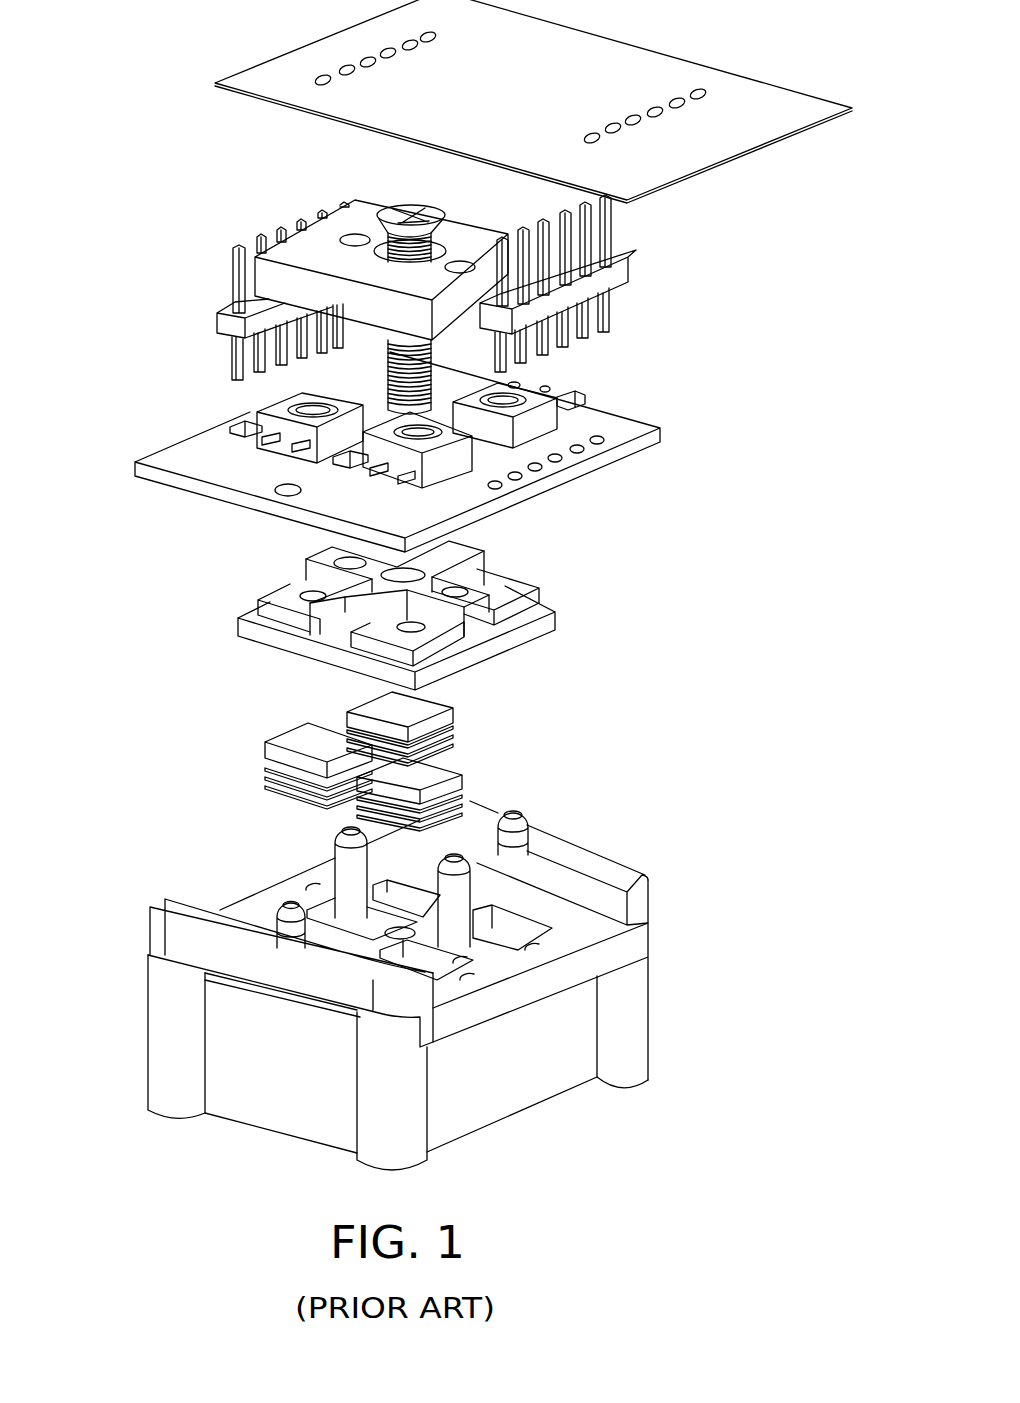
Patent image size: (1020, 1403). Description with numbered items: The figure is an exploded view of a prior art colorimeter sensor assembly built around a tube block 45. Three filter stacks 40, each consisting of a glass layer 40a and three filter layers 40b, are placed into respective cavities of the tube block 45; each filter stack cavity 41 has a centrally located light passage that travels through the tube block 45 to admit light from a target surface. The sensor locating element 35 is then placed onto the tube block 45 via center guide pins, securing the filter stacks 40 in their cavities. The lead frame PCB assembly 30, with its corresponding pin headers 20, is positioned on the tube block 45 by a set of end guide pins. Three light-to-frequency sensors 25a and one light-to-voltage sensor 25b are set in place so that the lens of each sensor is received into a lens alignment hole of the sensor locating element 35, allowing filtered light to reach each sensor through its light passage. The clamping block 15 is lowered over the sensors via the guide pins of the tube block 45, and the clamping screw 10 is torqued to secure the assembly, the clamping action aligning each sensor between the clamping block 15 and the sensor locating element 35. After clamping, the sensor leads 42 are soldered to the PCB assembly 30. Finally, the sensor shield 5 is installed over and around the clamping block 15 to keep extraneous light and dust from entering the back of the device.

The sensor shield 5 is at (215, 60).
The clamping screw 10 is at (368, 206).
The clamping block 15 is at (463, 240).
The pin headers 20 is at (220, 298).
The light-to-frequency sensors 25a is at (340, 384).
The light-to-voltage sensor 25b is at (558, 412).
The PCB assembly 30 is at (603, 430).
The sensor locating element 35 is at (226, 626).
The filter stacks 40 is at (252, 746).
The glass layer 40a is at (257, 752).
The filter layer 40b is at (224, 785).
The filter stack cavity 41 is at (403, 897).
The sensor leads 42 is at (548, 390).
The tube block 45 is at (662, 964).